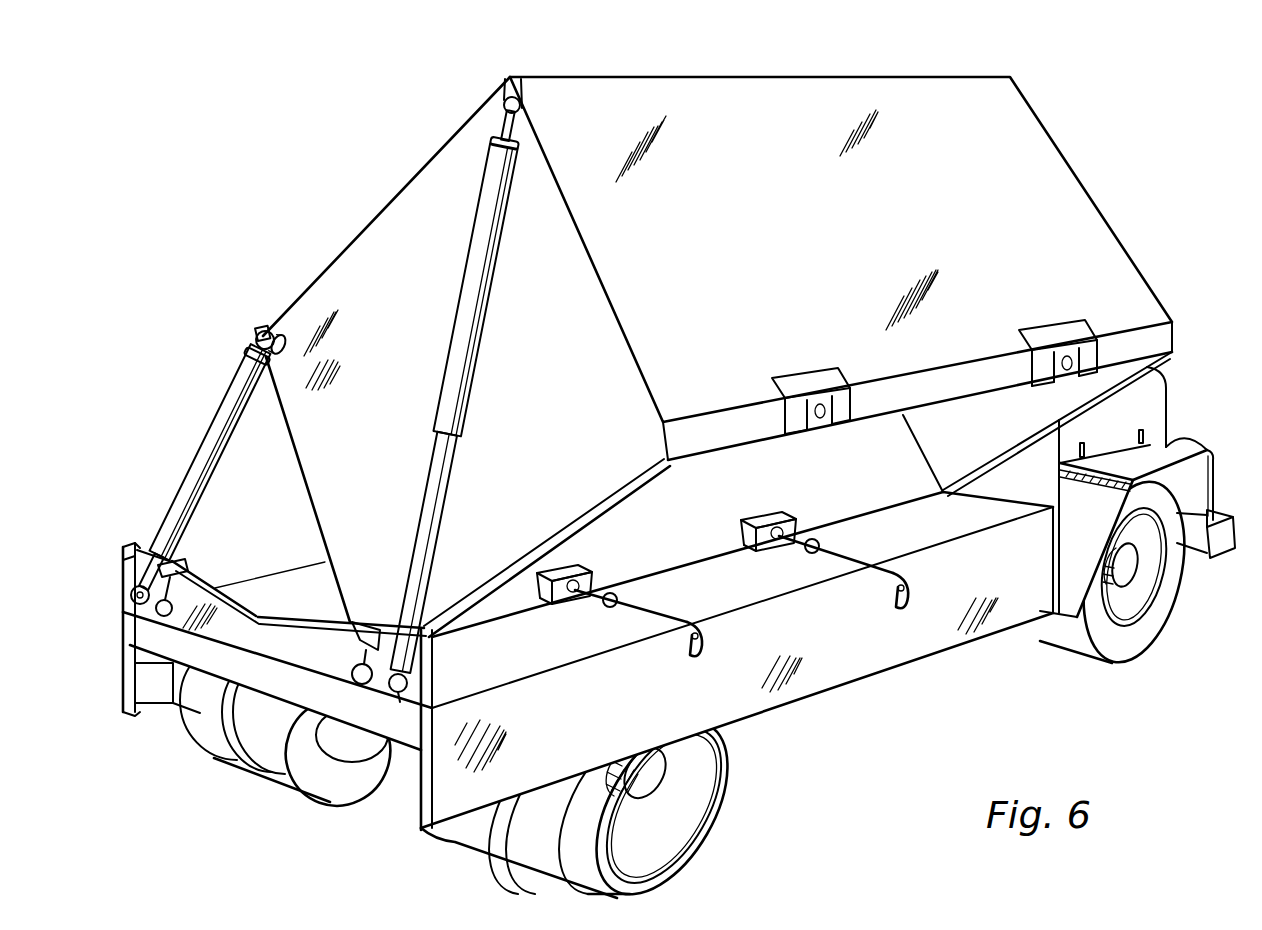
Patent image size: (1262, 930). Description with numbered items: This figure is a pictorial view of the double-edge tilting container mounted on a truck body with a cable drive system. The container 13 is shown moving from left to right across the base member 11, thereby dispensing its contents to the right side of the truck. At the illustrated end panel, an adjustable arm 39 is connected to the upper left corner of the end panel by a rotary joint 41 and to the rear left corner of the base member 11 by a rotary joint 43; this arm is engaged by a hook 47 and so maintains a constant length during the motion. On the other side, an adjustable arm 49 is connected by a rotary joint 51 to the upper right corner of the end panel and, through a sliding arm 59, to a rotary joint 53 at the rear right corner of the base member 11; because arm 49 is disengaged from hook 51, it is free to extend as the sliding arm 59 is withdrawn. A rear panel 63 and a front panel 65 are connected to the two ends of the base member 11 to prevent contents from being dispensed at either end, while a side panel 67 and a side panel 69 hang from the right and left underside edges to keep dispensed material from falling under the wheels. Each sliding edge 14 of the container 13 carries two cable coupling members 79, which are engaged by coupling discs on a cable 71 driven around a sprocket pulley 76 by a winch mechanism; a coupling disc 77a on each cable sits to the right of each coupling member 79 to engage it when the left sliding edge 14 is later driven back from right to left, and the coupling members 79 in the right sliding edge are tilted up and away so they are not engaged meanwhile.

The base member 11 is at (588, 668).
The container 13 is at (930, 86).
The sliding edge 14 is at (963, 398).
The adjustable arm 39 is at (229, 415).
The rotary joint 41 is at (262, 330).
The rotary joint 43 is at (128, 596).
The hook 47 is at (190, 567).
The adjustable arm 49 is at (468, 232).
The hook / rotary joint 51 is at (500, 102).
The rotary joint 53 is at (398, 694).
The sliding arm 59 is at (426, 520).
The rear panel 63 is at (125, 558).
The front panel 65 is at (1012, 454).
The side panel 67 is at (800, 684).
The side panel 69 is at (147, 670).
The cable 71 is at (662, 612).
The sprocket pulley 76 is at (684, 646).
The coupling disc 77a is at (603, 604).
The cable coupling member 79 is at (820, 404).